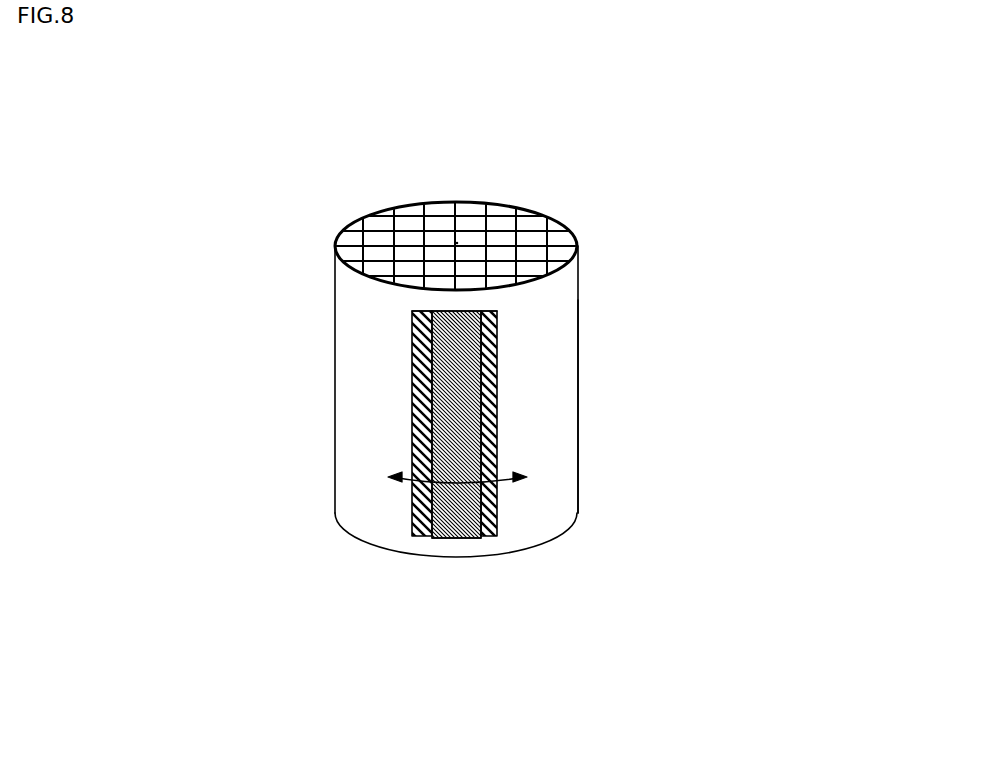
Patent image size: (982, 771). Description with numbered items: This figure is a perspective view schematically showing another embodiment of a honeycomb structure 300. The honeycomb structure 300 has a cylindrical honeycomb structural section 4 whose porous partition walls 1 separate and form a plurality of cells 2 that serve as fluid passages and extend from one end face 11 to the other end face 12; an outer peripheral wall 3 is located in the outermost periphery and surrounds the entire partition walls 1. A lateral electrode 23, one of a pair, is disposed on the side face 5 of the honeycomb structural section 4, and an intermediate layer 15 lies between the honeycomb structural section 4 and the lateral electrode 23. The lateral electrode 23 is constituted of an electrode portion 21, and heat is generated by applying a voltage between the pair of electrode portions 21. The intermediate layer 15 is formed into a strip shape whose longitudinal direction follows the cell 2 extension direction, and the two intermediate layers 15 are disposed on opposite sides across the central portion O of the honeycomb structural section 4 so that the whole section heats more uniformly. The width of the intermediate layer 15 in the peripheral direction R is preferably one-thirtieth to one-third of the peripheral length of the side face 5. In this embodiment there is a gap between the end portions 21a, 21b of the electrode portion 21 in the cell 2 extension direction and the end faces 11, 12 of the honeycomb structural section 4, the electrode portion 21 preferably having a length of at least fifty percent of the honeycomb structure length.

The honeycomb structure 300 is at (777, 88).
The honeycomb structural section 4 is at (587, 285).
The one end face 11 is at (335, 245).
The outer peripheral wall 3 is at (570, 345).
The side face 5 is at (563, 420).
The other end face 12 is at (570, 530).
The cells 2 is at (365, 220).
The partition walls 1 is at (502, 215).
The central portion O is at (457, 242).
The lateral electrode 23 is at (507, 645).
The electrode portion 21 is at (448, 537).
The end portion of electrode portion 21a is at (472, 312).
The end portion of electrode portion 21b is at (456, 540).
The intermediate layer 15 is at (418, 533).
The peripheral direction R is at (403, 478).